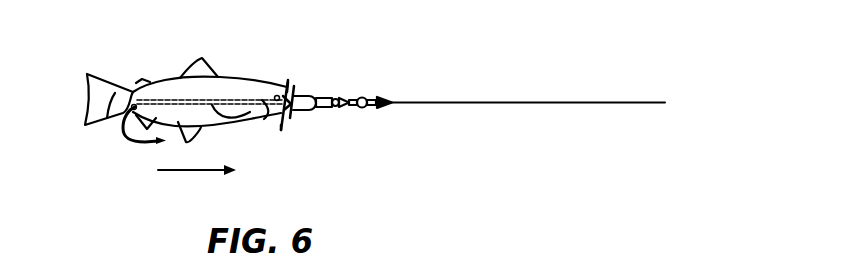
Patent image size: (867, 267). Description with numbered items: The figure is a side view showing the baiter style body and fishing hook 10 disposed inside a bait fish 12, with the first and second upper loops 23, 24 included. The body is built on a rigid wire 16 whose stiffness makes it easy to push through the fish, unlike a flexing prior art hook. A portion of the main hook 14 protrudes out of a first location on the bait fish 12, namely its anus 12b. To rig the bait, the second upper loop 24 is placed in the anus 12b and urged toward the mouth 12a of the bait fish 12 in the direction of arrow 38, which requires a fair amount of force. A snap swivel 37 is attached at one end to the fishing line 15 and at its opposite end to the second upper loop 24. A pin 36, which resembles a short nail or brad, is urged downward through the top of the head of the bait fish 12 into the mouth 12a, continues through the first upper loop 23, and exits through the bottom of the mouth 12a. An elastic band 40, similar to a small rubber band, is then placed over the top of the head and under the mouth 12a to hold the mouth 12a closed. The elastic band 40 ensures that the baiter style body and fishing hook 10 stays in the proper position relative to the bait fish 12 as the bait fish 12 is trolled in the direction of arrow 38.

The baiter style body and fishing hook 10 is at (297, 162).
The bait fish 12 is at (172, 79).
The mouth 12a is at (290, 119).
The anus 12b is at (128, 110).
The main hook 14 is at (134, 158).
The fishing line 15 is at (513, 103).
The wire 16 is at (207, 99).
The first upper loop 23 is at (313, 98).
The second upper loop 24 is at (281, 126).
The pin 36 is at (287, 80).
The snap swivel 37 is at (363, 99).
The arrow 38 is at (182, 171).
The elastic band 40 is at (300, 94).